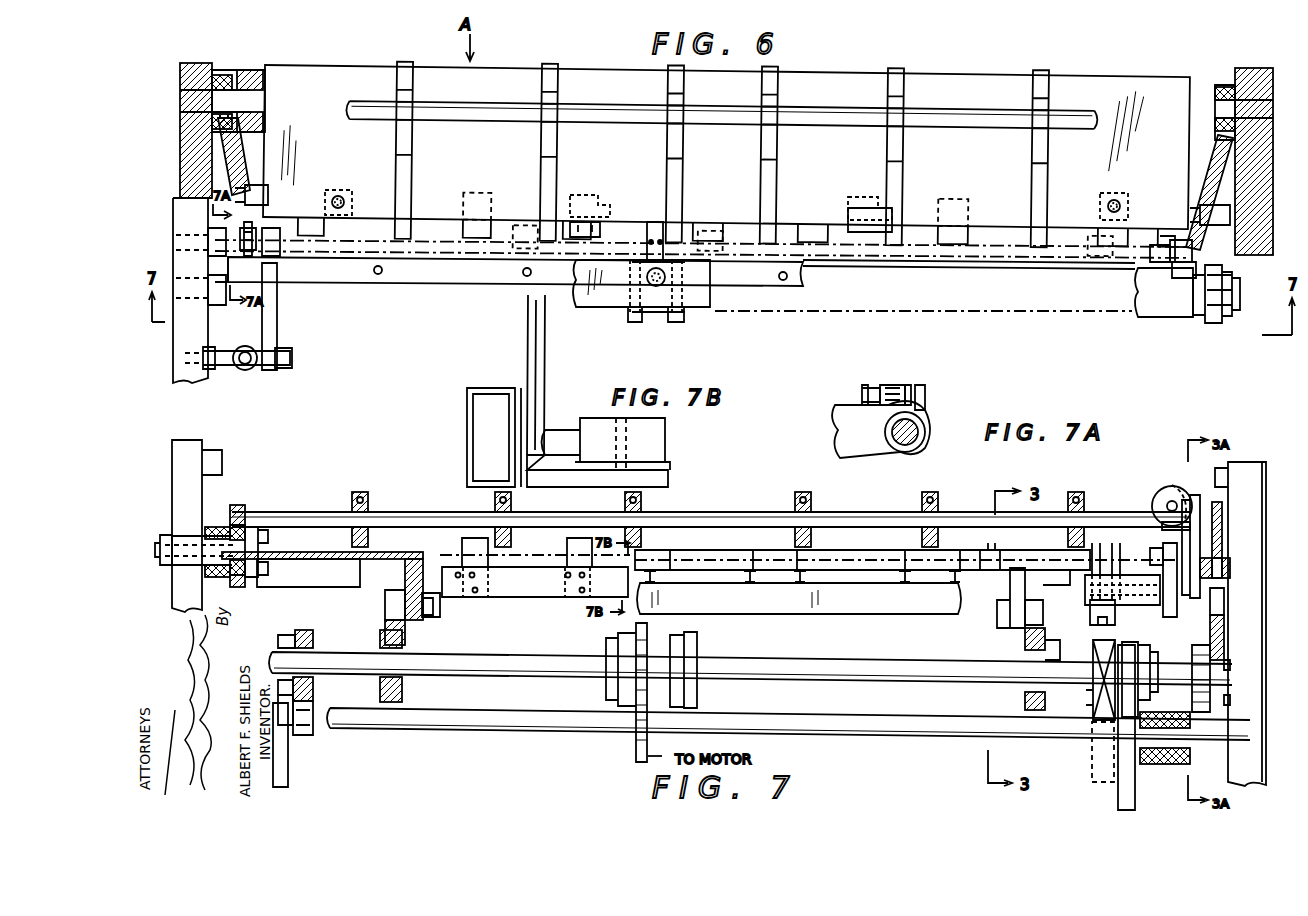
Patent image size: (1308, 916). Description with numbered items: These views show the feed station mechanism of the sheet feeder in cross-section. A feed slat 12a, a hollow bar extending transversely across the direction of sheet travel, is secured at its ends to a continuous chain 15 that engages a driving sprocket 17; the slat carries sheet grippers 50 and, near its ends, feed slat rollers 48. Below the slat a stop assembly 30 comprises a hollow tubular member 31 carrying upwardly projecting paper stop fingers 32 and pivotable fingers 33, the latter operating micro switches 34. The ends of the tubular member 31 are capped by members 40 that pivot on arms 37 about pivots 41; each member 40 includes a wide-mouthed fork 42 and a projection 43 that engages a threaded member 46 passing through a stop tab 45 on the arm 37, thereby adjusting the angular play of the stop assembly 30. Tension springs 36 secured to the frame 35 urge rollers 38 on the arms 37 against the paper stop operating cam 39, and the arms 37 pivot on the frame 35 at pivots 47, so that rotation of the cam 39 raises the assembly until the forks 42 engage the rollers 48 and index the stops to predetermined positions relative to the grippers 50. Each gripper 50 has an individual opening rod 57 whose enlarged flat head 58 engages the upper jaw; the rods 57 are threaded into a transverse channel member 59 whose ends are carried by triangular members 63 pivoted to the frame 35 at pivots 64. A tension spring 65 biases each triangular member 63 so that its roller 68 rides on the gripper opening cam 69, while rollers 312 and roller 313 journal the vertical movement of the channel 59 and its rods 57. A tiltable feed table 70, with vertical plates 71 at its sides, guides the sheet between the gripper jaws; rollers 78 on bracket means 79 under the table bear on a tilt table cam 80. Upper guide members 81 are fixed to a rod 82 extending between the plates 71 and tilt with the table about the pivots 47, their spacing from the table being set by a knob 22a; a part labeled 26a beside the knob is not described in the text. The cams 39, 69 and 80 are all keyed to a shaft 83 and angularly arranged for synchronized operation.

In FIG. 6, the feed slat 12a is at (592, 307).
In FIG. 7, the feed slat 12a is at (737, 552).
In FIG. 6, the continuous chain 15 is at (1240, 299).
In FIG. 7, the continuous chain 15 is at (1230, 566).
In FIG. 7, the driving sprocket 17 is at (1222, 515).
In FIG. 7, the knob 22a is at (1158, 494).
In FIG. 7, the roller bracket 26a is at (1180, 494).
In FIG. 6, the stop assembly 30 is at (1180, 232).
In FIG. 7, the stop assembly 30 is at (1175, 630).
In FIG. 6, the hollow tubular member 31 is at (716, 242).
In FIG. 7B, the hollow tubular member 31 is at (468, 448).
In FIG. 7, the hollow tubular member 31 is at (533, 600).
In FIG. 6, the paper stop fingers 32 is at (326, 225).
In FIG. 7, the paper stop fingers 32 is at (461, 550).
In FIG. 6, the pivotable paper stop fingers 33 is at (592, 231).
In FIG. 7B, the pivotable paper stop fingers 33 is at (540, 358).
In FIG. 7, the pivotable paper stop fingers 33 is at (566, 551).
In FIG. 6, the micro switches 34 is at (584, 208).
In FIG. 7B, the micro switches 34 is at (666, 450).
In FIG. 6, the frame 35 is at (182, 163).
In FIG. 6, the tension springs 36 is at (345, 198).
In FIG. 7, the tension springs 36 is at (1093, 698).
In FIG. 6, the arms 37 is at (241, 166).
In FIG. 6, the rollers 38 is at (1222, 222).
In FIG. 7, the rollers 38 is at (1225, 602).
In FIG. 7, the paper stop operating cam 39 is at (1224, 638).
In FIG. 6, the end cap member 40 is at (280, 238).
In FIG. 7A, the pivots 41 is at (916, 440).
In FIG. 6, the fork 42 is at (1170, 244).
In FIG. 6, the projection 43 is at (240, 265).
In FIG. 7A, the projection 43 is at (924, 392).
In FIG. 6, the stop tab 45 is at (240, 234).
In FIG. 7A, the stop tab 45 is at (895, 385).
In FIG. 6, the threaded member 46 is at (254, 236).
In FIG. 7A, the threaded member 46 is at (874, 386).
In FIG. 6, the pivots 47 is at (182, 99).
In FIG. 7, the pivots 47 is at (182, 532).
In FIG. 6, the feed slat rollers 48 is at (1170, 266).
In FIG. 7, the feed slat rollers 48 is at (1160, 556).
In FIG. 6, the sheet grippers 50 is at (659, 213).
In FIG. 7, the sheet grippers 50 is at (787, 552).
In FIG. 7, the opening rod 57 is at (760, 577).
In FIG. 6, the enlarged flat head 58 is at (378, 275).
In FIG. 7, the enlarged flat head 58 is at (656, 577).
In FIG. 6, the transverse channel member 59 is at (471, 283).
In FIG. 7, the transverse channel member 59 is at (762, 602).
In FIG. 6, the triangular member 63 is at (277, 330).
In FIG. 7, the triangular member 63 is at (290, 772).
In FIG. 7, the pivots 64 is at (880, 742).
In FIG. 6, the tension spring 65 is at (246, 371).
In FIG. 7, the roller 68 is at (305, 735).
In FIG. 7, the gripper opening cam 69 is at (313, 692).
In FIG. 6, the tiltable feed table 70 is at (982, 78).
In FIG. 7, the tiltable feed table 70 is at (334, 552).
In FIG. 7, the vertical plates 71 is at (238, 504).
In FIG. 7, the rollers 78 is at (384, 608).
In FIG. 7, the bracket means 79 is at (404, 568).
In FIG. 7, the tilt table cam 80 is at (406, 630).
In FIG. 6, the upper guide members 81 is at (413, 136).
In FIG. 7, the upper guide members 81 is at (382, 478).
In FIG. 6, the rod 82 is at (628, 120).
In FIG. 7, the rod 82 is at (600, 513).
In FIG. 7, the shaft 83 is at (806, 664).
In FIG. 6, the rollers 312 is at (210, 240).
In FIG. 6, the roller 313 is at (226, 306).